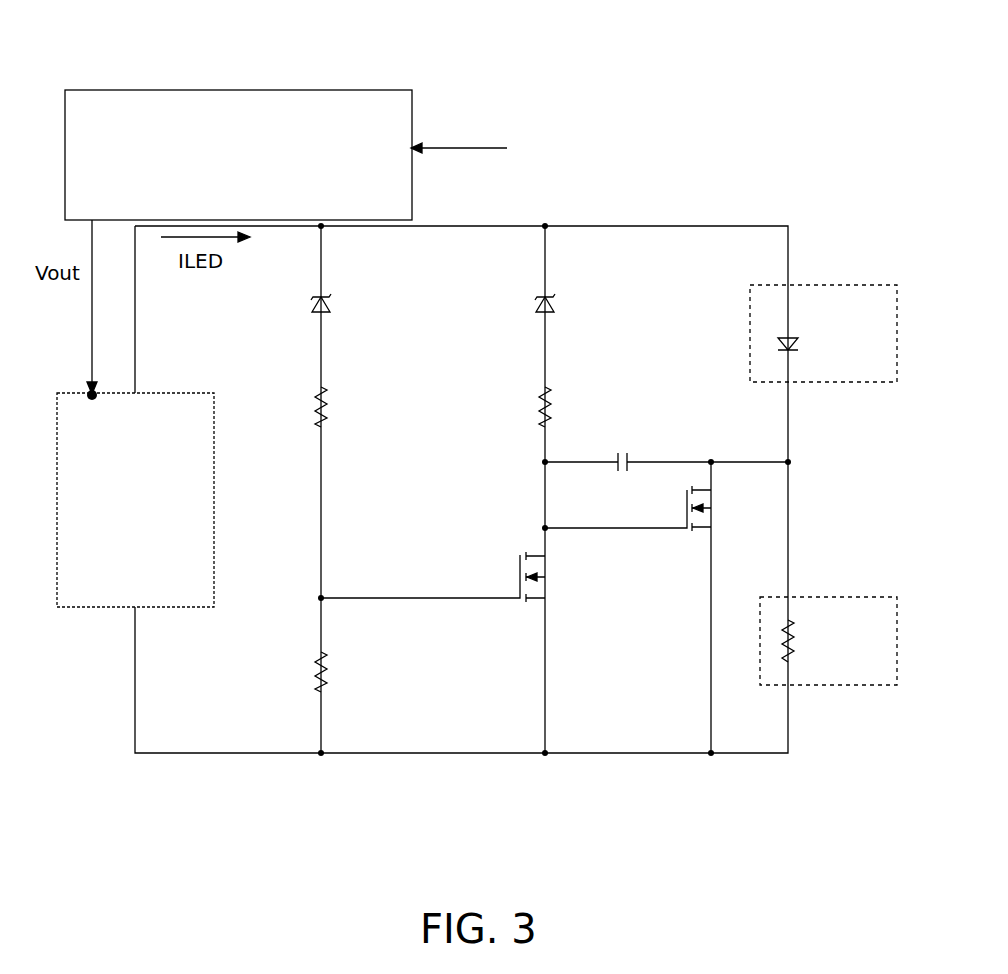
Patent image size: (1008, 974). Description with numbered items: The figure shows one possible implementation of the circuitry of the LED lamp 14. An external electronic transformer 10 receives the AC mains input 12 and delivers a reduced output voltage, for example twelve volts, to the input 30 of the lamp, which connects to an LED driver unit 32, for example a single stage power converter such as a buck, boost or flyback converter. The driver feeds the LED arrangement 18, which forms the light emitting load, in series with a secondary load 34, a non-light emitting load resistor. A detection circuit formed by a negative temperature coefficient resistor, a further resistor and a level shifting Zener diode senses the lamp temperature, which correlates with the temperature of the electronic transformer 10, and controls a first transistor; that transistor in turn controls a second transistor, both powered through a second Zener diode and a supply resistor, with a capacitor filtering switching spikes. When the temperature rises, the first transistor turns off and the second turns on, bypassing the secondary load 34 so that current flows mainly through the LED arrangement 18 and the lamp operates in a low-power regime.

The electronic transformer 10 is at (110, 90).
The AC mains input 12 is at (470, 148).
The LED lamp 14 is at (750, 165).
The LED arrangement 18 is at (860, 283).
The input 30 is at (92, 396).
The LED driver unit 32 is at (118, 607).
The secondary load 34 is at (858, 597).